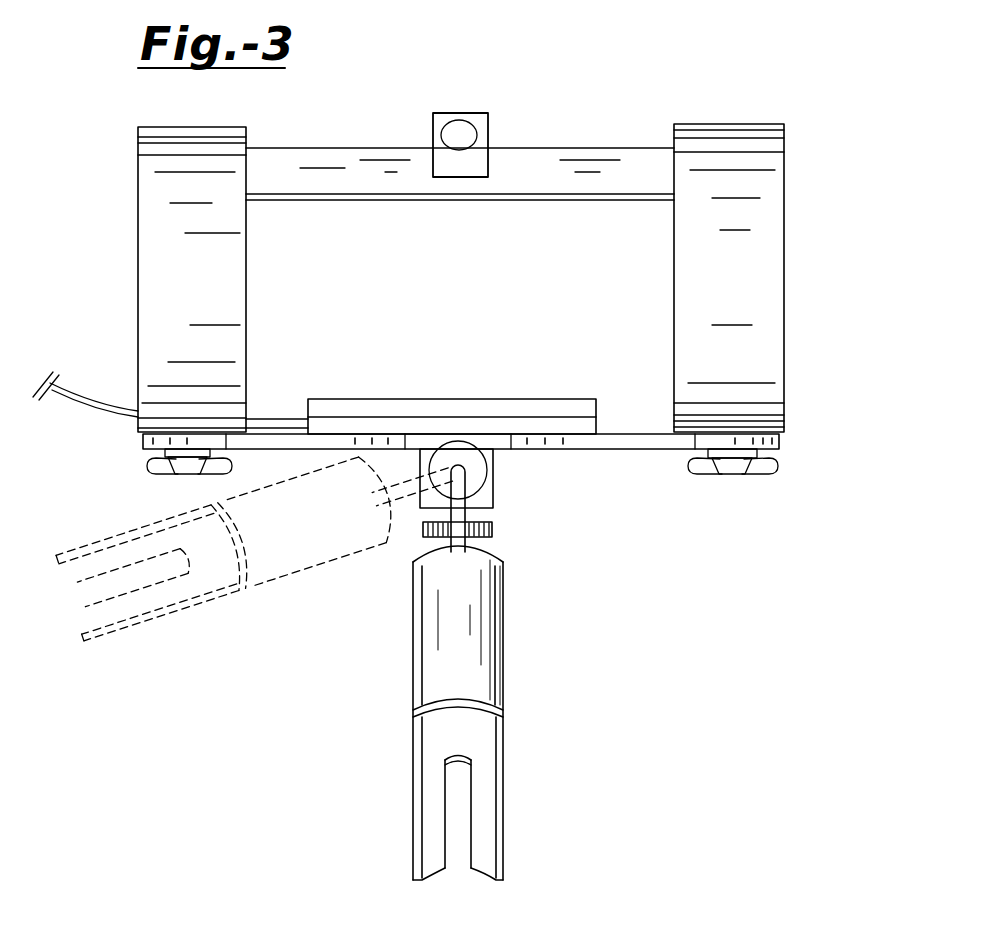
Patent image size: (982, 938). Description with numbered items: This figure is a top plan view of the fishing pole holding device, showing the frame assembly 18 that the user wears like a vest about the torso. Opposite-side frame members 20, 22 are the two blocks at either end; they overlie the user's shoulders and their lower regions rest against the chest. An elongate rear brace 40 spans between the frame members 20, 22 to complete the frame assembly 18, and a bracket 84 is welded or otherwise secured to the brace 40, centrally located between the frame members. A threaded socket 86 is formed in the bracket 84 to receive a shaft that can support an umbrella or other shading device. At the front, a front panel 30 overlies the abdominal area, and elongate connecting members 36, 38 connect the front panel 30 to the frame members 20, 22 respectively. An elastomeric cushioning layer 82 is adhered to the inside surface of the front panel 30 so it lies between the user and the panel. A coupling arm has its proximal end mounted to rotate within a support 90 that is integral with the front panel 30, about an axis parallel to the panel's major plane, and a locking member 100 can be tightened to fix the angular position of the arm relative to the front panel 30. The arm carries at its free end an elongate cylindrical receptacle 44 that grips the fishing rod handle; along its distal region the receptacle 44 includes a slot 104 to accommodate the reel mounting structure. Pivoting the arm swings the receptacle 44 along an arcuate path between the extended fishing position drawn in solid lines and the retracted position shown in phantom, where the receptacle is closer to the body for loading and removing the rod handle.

The frame assembly 18 is at (462, 293).
The frame member 20 is at (135, 235).
The frame member 22 is at (787, 292).
The front panel 30 is at (437, 416).
The connecting member 36 is at (253, 449).
The connecting member 38 is at (635, 449).
The rear brace 40 is at (460, 165).
The receptacle 44 is at (347, 656).
The elastomeric cushioning layer 82 is at (332, 398).
The bracket 84 is at (460, 127).
The threaded socket 86 is at (470, 121).
The support 90 is at (497, 475).
The locking member 100 is at (495, 528).
The slot 104 is at (466, 795).